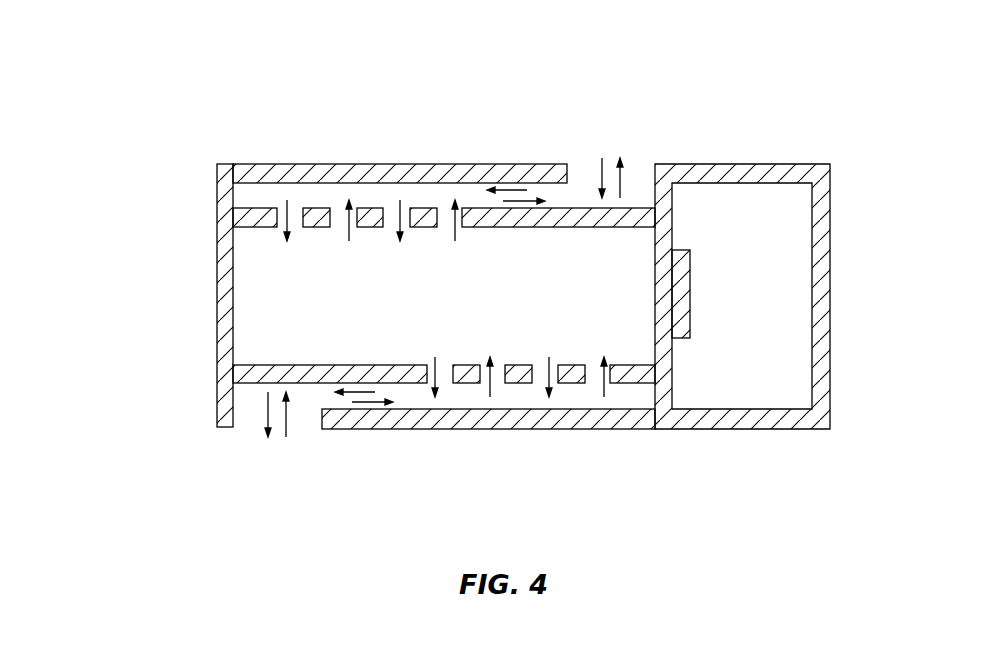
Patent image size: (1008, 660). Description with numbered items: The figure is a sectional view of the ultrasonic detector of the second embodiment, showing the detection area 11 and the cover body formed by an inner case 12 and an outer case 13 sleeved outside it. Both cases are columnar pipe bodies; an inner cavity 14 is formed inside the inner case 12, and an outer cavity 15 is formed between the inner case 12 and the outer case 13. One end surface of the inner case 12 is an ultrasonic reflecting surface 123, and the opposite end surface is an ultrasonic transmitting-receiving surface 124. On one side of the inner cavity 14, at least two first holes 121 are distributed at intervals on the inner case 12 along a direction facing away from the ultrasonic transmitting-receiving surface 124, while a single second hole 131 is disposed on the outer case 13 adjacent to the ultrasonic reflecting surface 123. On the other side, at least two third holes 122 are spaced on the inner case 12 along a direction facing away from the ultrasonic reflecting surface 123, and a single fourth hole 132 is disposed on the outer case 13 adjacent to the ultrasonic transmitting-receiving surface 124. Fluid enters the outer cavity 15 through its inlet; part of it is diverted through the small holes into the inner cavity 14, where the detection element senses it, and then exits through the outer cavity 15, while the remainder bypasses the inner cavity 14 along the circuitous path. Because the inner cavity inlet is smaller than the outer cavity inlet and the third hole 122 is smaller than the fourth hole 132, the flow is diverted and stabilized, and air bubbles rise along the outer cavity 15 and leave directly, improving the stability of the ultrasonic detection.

The detection area 11 is at (262, 318).
The inner case 12 is at (520, 208).
The outer case 13 is at (397, 163).
The inner cavity 14 is at (262, 278).
The outer cavity 15 is at (585, 168).
The first hole 121 is at (498, 428).
The third hole 122 is at (297, 212).
The ultrasonic reflecting surface 123 is at (225, 255).
The ultrasonic transmitting-receiving surface 124 is at (660, 250).
The second hole 131 is at (250, 428).
The fourth hole 132 is at (630, 168).